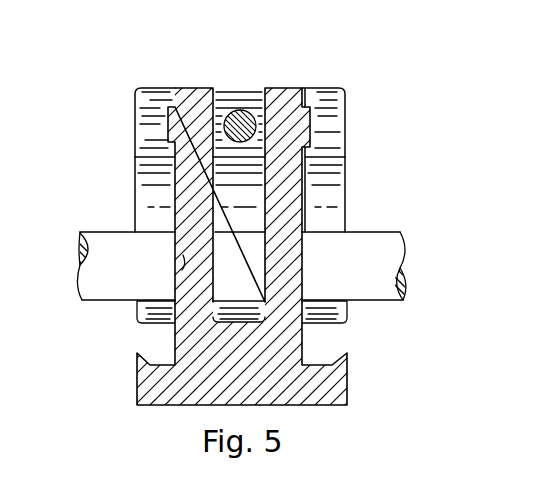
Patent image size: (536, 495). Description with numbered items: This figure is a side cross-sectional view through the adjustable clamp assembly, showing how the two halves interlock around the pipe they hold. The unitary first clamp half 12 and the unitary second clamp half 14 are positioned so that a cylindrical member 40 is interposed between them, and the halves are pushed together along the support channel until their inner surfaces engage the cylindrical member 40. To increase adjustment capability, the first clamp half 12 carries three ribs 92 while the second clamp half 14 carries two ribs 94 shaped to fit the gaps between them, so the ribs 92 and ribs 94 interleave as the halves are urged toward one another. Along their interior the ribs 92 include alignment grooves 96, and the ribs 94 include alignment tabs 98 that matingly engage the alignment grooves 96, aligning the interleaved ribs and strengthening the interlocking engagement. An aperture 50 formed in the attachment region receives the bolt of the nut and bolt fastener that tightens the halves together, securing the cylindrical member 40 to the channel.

The first clamp half 12 is at (347, 200).
The second clamp half 14 is at (305, 278).
The cylindrical member 40 is at (388, 232).
The aperture 50 is at (238, 110).
The ribs 92 is at (145, 102).
The ribs 94 is at (177, 278).
The alignment grooves 96 is at (170, 129).
The alignment tabs 98 is at (310, 105).